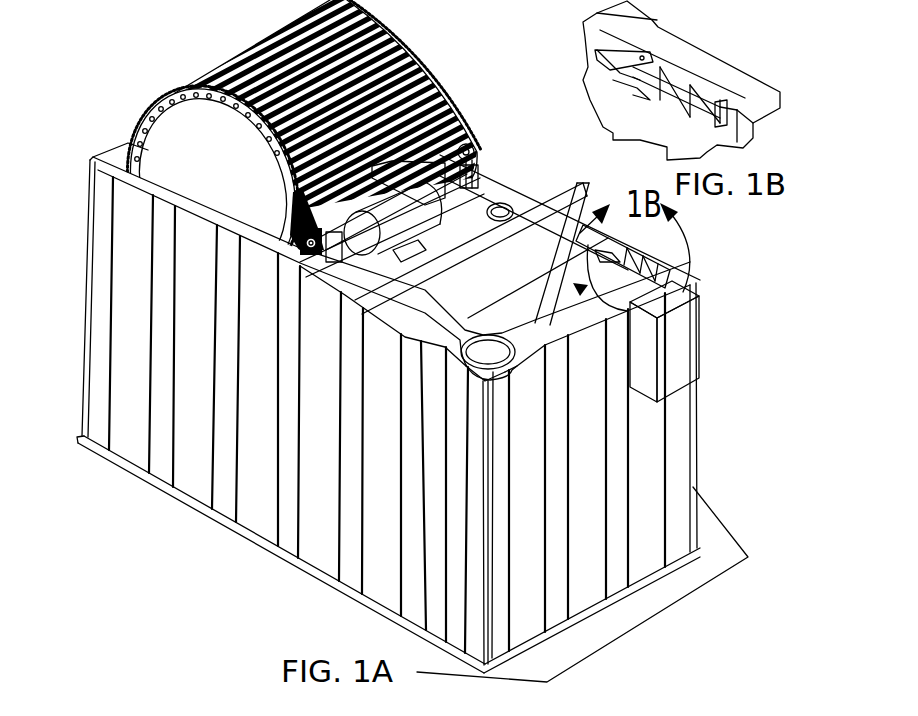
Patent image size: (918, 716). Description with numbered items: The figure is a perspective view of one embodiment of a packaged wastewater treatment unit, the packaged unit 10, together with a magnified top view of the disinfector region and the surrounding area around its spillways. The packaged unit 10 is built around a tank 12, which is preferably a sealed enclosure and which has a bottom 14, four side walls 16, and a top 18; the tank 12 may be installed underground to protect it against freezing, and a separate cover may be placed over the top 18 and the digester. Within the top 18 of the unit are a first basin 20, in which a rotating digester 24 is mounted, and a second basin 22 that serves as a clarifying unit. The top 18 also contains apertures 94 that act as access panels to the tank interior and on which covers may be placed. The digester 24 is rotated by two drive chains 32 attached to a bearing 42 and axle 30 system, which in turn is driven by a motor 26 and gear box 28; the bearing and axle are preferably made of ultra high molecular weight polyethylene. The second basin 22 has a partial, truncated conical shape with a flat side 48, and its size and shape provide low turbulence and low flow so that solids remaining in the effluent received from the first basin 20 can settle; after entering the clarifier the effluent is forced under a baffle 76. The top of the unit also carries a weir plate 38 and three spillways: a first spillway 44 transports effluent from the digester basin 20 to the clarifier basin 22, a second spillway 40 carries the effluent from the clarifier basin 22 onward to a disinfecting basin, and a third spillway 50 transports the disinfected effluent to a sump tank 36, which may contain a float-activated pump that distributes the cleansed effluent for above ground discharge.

In FIG. 1A, the packaged unit 10 is at (382, 360).
In FIG. 1A, the tank 12 is at (382, 391).
In FIG. 1A, the bottom 14 is at (412, 559).
In FIG. 1A, the side walls 16 is at (341, 426).
In FIG. 1A, the first basin 20 is at (358, 233).
In FIG. 1A, the second basin 22 is at (626, 295).
In FIG. 1A, the rotating digester 24 is at (300, 167).
In FIG. 1A, the motor 26 is at (279, 381).
In FIG. 1A, the gear box 28 is at (420, 89).
In FIG. 1A, the axle 30 is at (435, 198).
In FIG. 1A, the drive chains 32 is at (282, 305).
In FIG. 1A, the sump tank 36 is at (700, 341).
In FIG. 1A, the bearing 42 is at (301, 344).
In FIG. 1A, the first spillway 44 is at (360, 399).
In FIG. 1A, the flat side 48 is at (369, 465).
In FIG. 1A, the baffle 76 is at (598, 245).
In FIG. 1A, the apertures 94 is at (428, 391).
In FIG. 1B, the top 18 is at (702, 73).
In FIG. 1B, the weir plate 38 is at (601, 114).
In FIG. 1B, the second spillway 40 is at (595, 49).
In FIG. 1B, the third spillway 50 is at (756, 72).